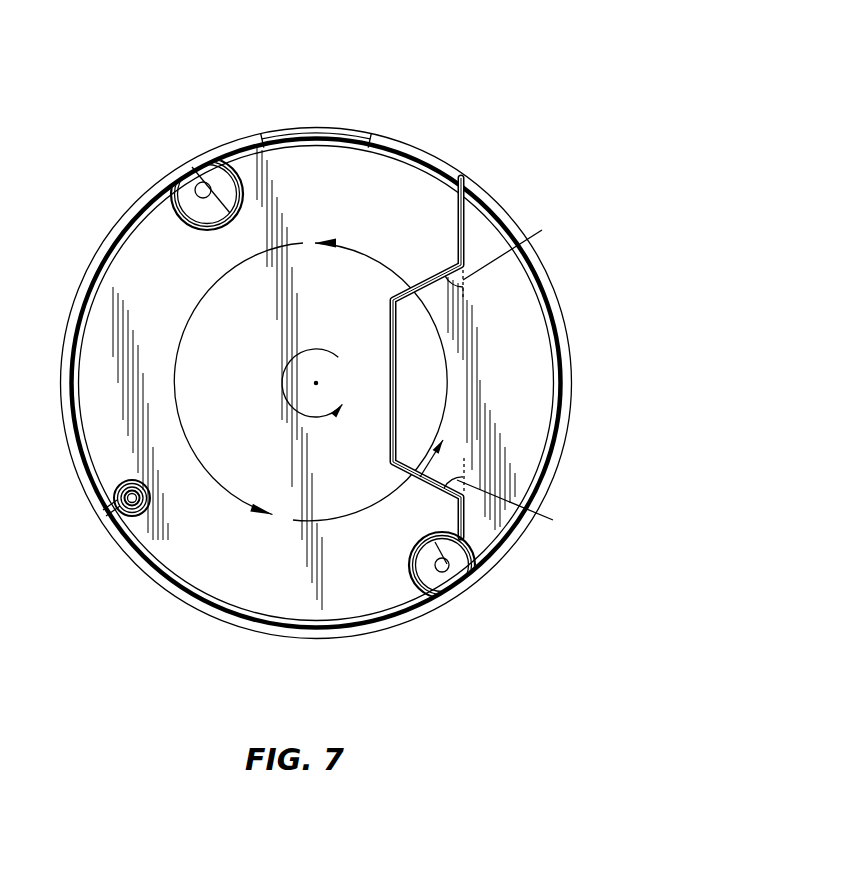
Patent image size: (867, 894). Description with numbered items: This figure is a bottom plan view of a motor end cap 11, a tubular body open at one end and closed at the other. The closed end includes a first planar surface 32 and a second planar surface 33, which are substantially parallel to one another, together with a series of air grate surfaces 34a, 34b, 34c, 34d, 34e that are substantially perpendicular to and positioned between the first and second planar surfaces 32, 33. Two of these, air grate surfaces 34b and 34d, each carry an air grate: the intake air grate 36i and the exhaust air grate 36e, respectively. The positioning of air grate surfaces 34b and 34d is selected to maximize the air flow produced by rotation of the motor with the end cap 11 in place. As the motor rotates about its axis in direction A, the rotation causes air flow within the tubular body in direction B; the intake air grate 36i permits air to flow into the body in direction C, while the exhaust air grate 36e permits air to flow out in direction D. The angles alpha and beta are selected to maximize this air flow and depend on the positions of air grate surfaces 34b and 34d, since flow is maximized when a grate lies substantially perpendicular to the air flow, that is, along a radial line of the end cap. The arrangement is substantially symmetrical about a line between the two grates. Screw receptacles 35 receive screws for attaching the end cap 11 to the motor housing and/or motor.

The end cap 11 is at (465, 72).
The first planar surface 32 is at (383, 200).
The second planar surface 33 is at (507, 293).
The air grate surface 34a is at (462, 220).
The air grate surface 34b is at (468, 296).
The air grate surface 34c is at (393, 384).
The air grate surface 34d is at (420, 598).
The air grate surface 34e is at (467, 518).
The screw receptacle 35 is at (200, 187).
The exhaust air grate 36e is at (455, 465).
The intake air grate 36i is at (468, 296).